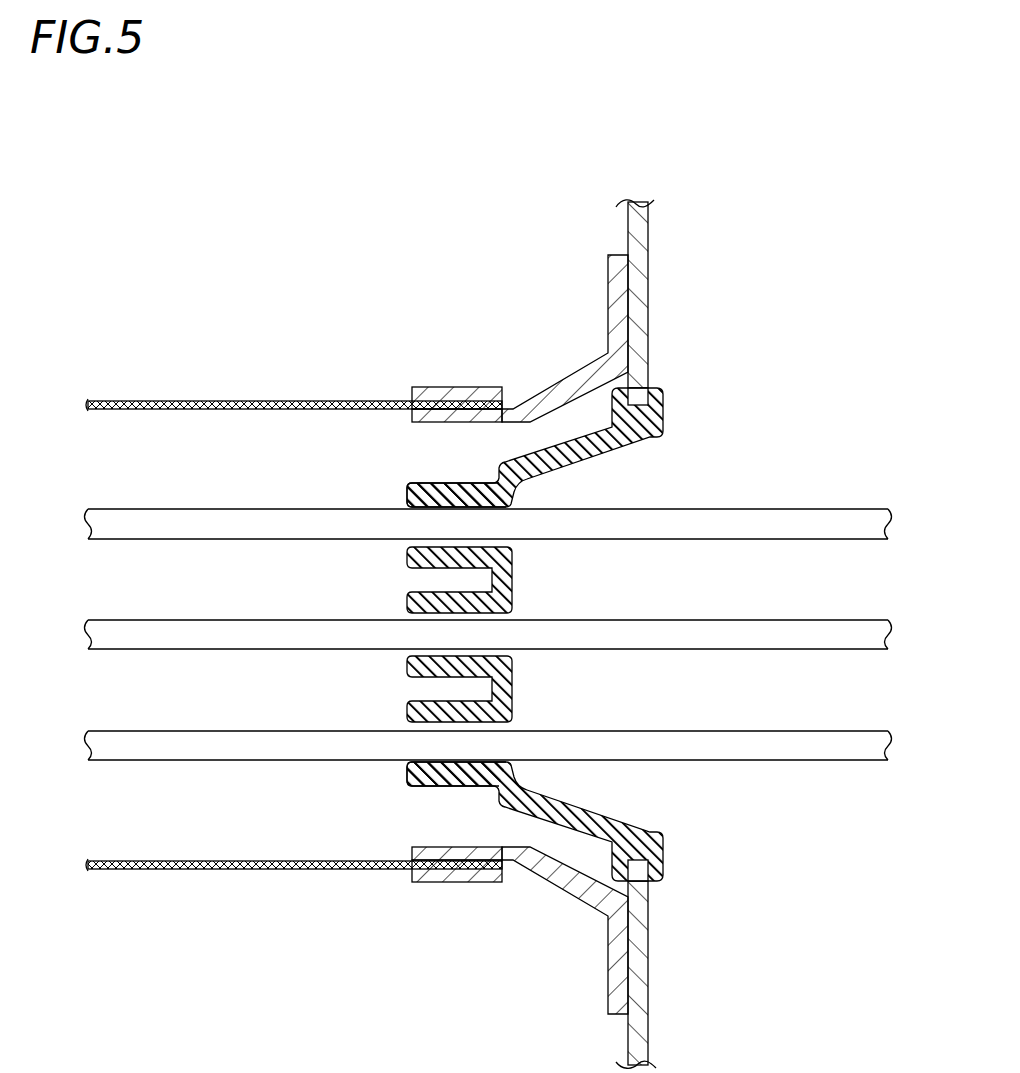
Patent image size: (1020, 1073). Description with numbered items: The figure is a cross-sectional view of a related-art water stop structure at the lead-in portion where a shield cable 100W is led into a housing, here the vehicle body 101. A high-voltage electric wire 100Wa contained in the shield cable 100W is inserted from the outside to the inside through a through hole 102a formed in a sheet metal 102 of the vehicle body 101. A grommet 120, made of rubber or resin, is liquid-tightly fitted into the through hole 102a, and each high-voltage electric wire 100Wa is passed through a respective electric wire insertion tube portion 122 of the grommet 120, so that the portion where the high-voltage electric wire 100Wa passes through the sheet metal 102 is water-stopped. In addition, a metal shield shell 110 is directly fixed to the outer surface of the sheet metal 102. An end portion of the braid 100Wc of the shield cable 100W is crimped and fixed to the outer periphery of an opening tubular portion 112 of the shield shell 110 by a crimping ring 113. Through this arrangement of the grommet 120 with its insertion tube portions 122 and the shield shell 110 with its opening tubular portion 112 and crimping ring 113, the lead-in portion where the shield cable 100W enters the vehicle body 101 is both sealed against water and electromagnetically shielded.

The shield cable 100W is at (223, 893).
The high-voltage electric wire 100Wa is at (800, 508).
The braid 100Wc is at (293, 870).
The vehicle body 101 is at (722, 327).
The sheet metal 102 is at (632, 229).
The through hole 102a is at (664, 422).
The shield shell 110 is at (562, 380).
The opening tubular portion 112 is at (448, 416).
The crimping ring 113 is at (440, 390).
The grommet 120 is at (618, 828).
The electric wire insertion tube portion 122 is at (407, 490).